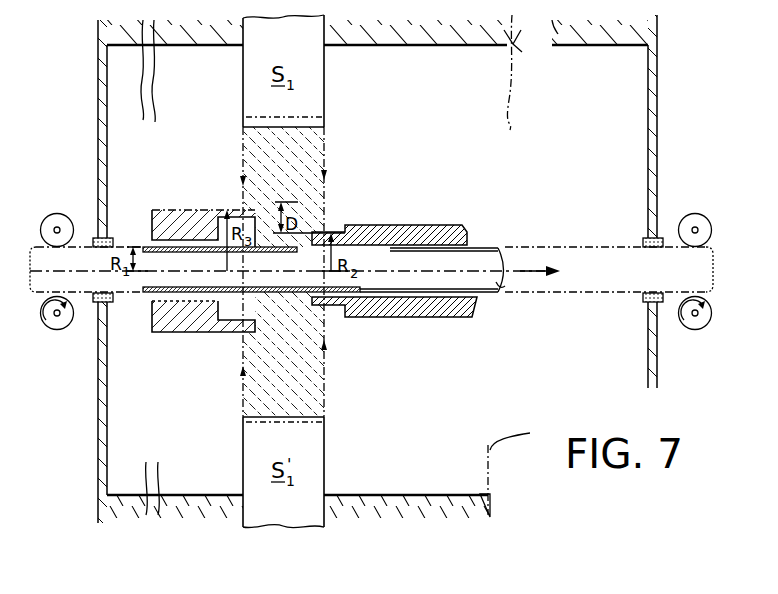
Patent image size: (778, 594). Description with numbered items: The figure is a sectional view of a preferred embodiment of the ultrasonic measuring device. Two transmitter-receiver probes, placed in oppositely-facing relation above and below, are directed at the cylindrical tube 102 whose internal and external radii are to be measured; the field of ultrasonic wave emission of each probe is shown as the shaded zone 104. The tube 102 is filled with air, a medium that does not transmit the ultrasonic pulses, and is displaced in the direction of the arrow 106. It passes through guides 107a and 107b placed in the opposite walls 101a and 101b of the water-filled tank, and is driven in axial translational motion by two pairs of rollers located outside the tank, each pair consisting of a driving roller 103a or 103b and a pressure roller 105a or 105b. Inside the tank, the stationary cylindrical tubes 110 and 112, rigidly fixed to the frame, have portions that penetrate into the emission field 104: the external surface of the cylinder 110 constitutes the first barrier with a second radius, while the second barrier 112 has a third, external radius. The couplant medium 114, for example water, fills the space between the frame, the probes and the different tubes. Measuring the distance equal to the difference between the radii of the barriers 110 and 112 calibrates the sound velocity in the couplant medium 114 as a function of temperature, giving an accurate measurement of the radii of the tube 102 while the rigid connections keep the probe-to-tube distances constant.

The tank wall 101a is at (100, 93).
The tank wall 101b is at (656, 107).
The cylindrical tube 102 is at (486, 252).
The driving roller 103a is at (50, 327).
The driving roller 103b is at (684, 328).
The ultrasonic wave emission field 104 is at (305, 168).
The pressure roller 105a is at (50, 213).
The pressure roller 105b is at (690, 213).
The arrow 106 is at (532, 278).
The guide 107a is at (110, 301).
The guide 107b is at (643, 242).
The cylindrical tube (first barrier) 110 is at (430, 225).
The cylindrical tube (second barrier) 112 is at (192, 212).
The couplant medium 114 is at (426, 115).